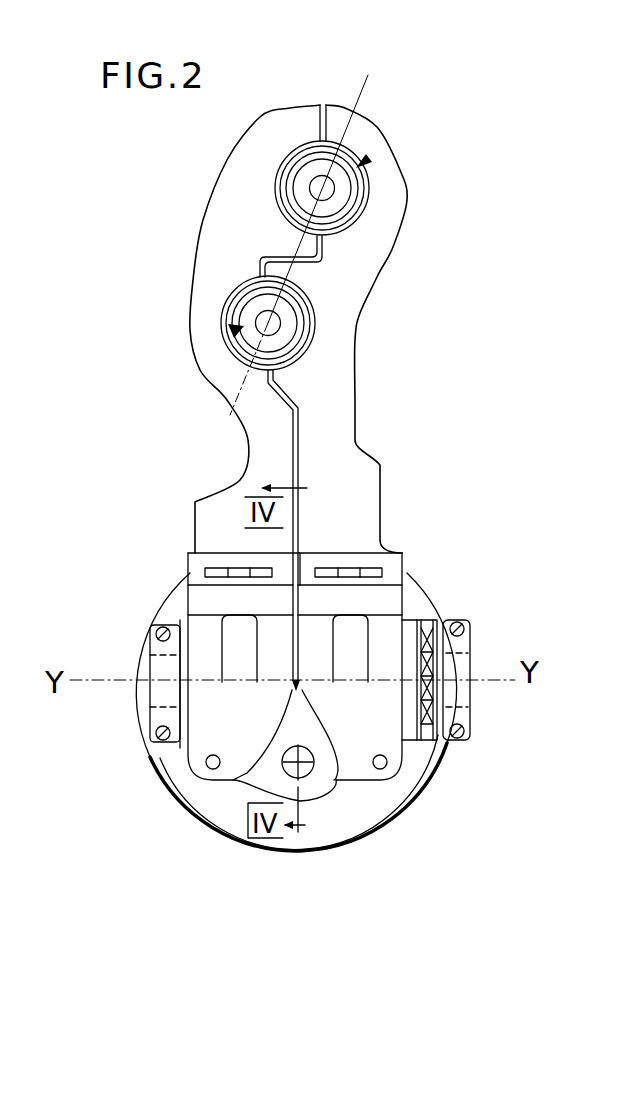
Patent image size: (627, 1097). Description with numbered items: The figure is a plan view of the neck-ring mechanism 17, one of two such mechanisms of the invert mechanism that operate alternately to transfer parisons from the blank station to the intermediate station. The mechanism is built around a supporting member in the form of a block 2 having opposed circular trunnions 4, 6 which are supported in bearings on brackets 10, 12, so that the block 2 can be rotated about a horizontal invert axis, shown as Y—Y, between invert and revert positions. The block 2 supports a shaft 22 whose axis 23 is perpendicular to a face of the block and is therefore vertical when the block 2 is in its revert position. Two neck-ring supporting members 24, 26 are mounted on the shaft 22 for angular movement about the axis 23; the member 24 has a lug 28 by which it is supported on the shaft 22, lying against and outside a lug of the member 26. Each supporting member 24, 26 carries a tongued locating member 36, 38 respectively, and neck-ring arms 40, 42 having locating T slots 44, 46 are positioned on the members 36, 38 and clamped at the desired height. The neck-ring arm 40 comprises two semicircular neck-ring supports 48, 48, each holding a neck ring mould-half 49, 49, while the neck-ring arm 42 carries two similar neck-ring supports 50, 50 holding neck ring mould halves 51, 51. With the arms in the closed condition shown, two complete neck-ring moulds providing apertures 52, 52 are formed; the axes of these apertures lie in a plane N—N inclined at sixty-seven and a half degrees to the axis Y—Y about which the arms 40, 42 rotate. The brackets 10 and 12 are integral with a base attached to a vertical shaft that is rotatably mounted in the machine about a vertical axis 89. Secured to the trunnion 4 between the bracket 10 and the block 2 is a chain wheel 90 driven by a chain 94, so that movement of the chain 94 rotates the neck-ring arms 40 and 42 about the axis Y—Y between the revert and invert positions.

The block 2 is at (170, 753).
The trunnion 4 is at (470, 700).
The trunnion 6 is at (135, 708).
The bracket 10 is at (458, 648).
The bracket 12 is at (157, 650).
The neck-ring mechanism 17 is at (522, 387).
The shaft 22 is at (245, 780).
The axis 23 is at (312, 778).
The neck-ring supporting member 24 is at (237, 757).
The neck-ring supporting member 26 is at (408, 745).
The lug 28 is at (318, 805).
The tongued locating member 36 is at (190, 570).
The tongued locating member 38 is at (412, 572).
The neck-ring arm 40 is at (222, 525).
The neck-ring arm 42 is at (363, 503).
The locating T slot 44 is at (228, 572).
The locating T slot 46 is at (365, 537).
The neck-ring support 48 is at (274, 184).
The neck ring mould-half 49 is at (286, 198).
The neck-ring support 50 is at (372, 192).
The neck ring mould half 51 is at (309, 317).
The aperture 52 is at (362, 163).
The vertical axis 89 is at (290, 690).
The chain wheel 90 is at (420, 698).
The chain 94 is at (428, 622).